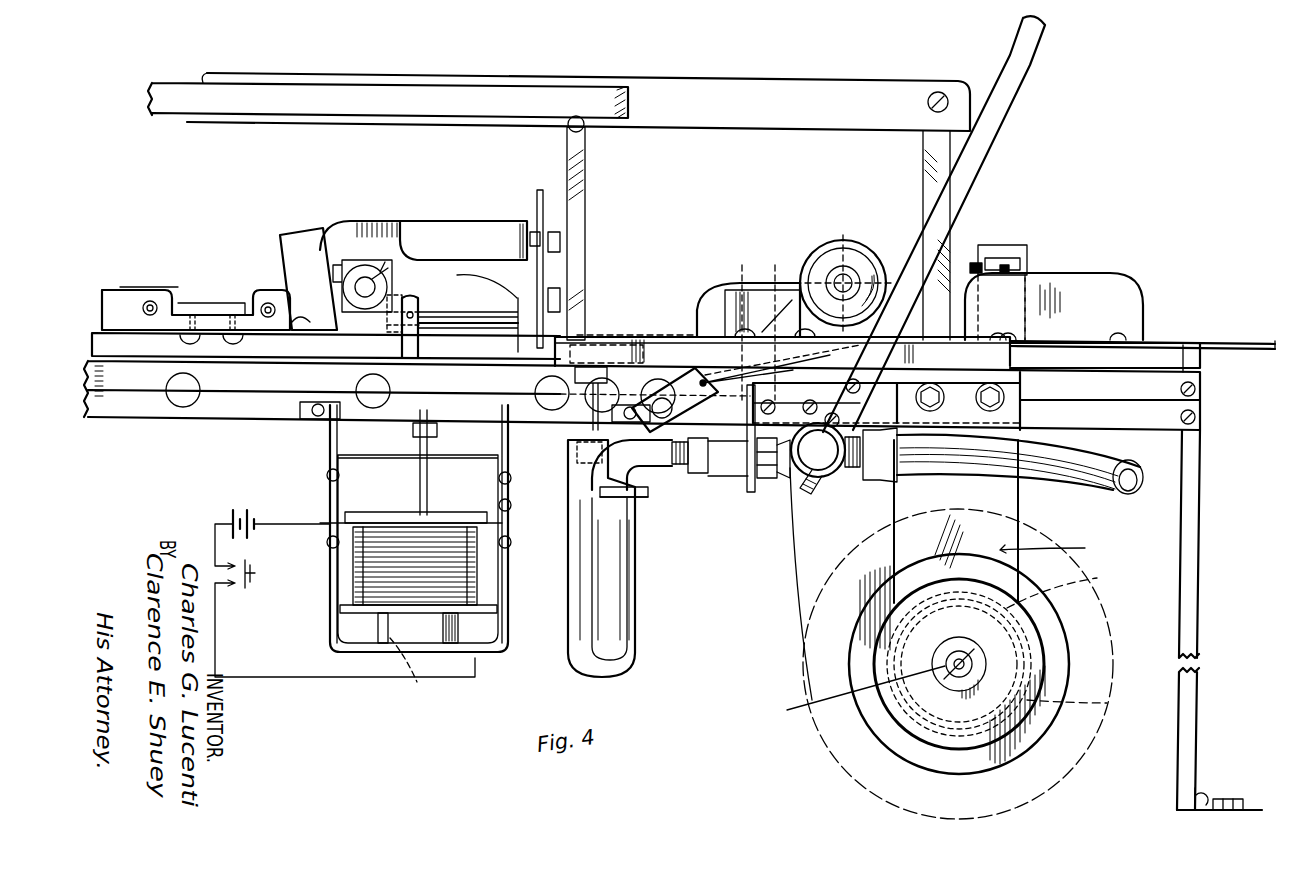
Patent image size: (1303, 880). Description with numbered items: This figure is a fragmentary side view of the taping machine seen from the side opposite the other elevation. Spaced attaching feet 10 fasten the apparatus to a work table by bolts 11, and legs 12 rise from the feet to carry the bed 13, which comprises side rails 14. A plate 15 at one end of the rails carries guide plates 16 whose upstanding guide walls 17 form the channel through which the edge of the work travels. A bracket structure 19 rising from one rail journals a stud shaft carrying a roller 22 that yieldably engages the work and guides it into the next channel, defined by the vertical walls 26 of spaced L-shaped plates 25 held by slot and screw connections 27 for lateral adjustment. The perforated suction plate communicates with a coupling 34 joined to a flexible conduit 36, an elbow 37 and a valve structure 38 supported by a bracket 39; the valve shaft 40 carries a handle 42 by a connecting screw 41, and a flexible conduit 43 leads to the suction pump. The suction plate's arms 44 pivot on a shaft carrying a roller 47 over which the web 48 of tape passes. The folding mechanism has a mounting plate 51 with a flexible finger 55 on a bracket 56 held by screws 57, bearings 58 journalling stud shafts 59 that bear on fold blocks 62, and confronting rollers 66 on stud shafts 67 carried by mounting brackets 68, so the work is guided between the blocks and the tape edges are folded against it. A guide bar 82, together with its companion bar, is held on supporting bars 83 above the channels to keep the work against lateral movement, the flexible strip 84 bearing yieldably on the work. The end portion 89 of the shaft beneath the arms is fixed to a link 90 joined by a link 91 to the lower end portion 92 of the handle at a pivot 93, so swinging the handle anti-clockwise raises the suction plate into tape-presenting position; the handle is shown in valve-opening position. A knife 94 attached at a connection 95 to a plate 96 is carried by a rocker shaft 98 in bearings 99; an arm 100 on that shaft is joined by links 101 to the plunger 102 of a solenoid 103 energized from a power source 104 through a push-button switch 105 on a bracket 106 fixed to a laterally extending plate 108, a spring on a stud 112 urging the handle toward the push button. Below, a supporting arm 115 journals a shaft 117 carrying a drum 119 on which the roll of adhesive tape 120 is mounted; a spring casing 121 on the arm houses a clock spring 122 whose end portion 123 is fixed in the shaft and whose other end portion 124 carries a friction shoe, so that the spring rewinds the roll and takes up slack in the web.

The attaching feet 10 is at (1203, 795).
The bolts 11 is at (1245, 808).
The legs 12 is at (1198, 548).
The bed 13 is at (219, 430).
The side rails 14 is at (1138, 420).
The plate 15 is at (1215, 350).
The guide plates 16 is at (1140, 338).
The upstanding guide walls 17 is at (1097, 321).
The bracket structure 19 is at (1005, 245).
The roller 22 is at (985, 262).
The L-shaped plates 25 is at (697, 335).
The vertical walls 26 is at (772, 317).
The slot and screw connections 27 is at (722, 298).
The coupling 34 is at (615, 345).
The flexible conduit 36 is at (578, 565).
The elbow 37 is at (640, 473).
The valve structure 38 is at (780, 482).
The bracket 39 is at (750, 492).
The shaft 40 is at (822, 460).
The connecting screw 41 is at (845, 412).
The handle 42 is at (965, 186).
The flexible conduit 43 is at (1060, 482).
The arms 44 is at (775, 280).
The roller 47 is at (742, 280).
The web 48 is at (790, 485).
The mounting plate 51 is at (275, 340).
The flexible finger 55 is at (423, 240).
The bracket 56 is at (308, 279).
The screws 57 is at (292, 310).
The bearings 58 is at (134, 298).
The stud shafts 59 is at (152, 300).
The fold blocks 62 is at (180, 290).
The rollers 66 is at (340, 262).
The stud shafts 67 is at (365, 278).
The mounting brackets 68 is at (382, 270).
The guide bar 82 is at (168, 116).
The supporting bars 83 is at (585, 166).
The flexible strip 84 is at (842, 116).
The end portion 89 is at (700, 460).
The link 90 is at (680, 372).
The link 91 is at (730, 478).
The lower end portion 92 is at (860, 386).
The pivotal connection 93 is at (880, 350).
The knife 94 is at (547, 205).
The connection 95 is at (565, 297).
The plate 96 is at (537, 240).
The rocker shaft 98 is at (472, 320).
The bearings 99 is at (402, 298).
The arm 100 is at (402, 340).
The links 101 is at (428, 470).
The plunger 102 is at (417, 682).
The solenoid 103 is at (358, 595).
The power source 104 is at (242, 512).
The push-button switch 105 is at (838, 268).
The bracket 106 is at (868, 250).
The laterally extending plate 108 is at (1015, 355).
The stud 112 is at (922, 386).
The supporting arm 115 is at (1033, 541).
The shaft 117 is at (853, 699).
The drum 119 is at (867, 727).
The roll of adhesive tape 120 is at (1120, 646).
The spring casing 121 is at (1037, 628).
The clock spring 122 is at (1105, 712).
The end portion 123 is at (978, 648).
The other end portion 124 is at (1074, 588).